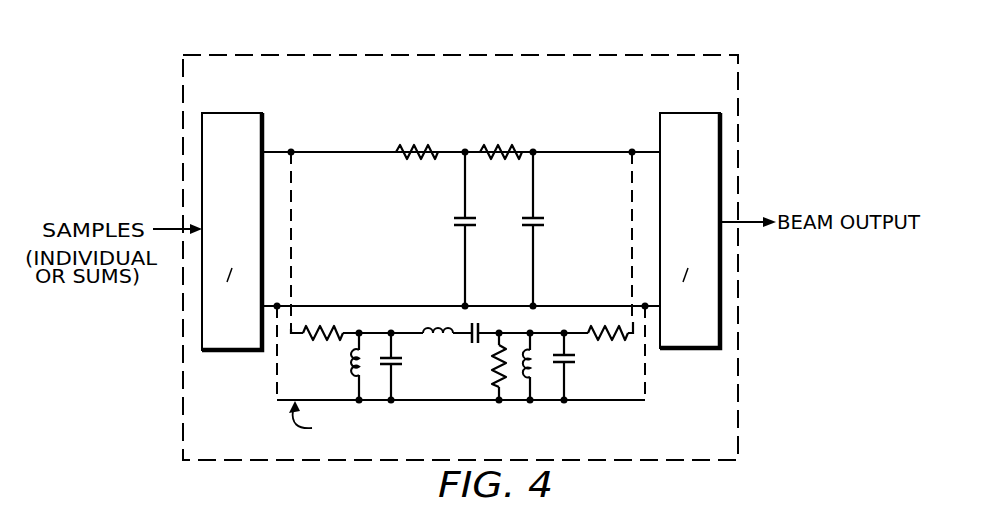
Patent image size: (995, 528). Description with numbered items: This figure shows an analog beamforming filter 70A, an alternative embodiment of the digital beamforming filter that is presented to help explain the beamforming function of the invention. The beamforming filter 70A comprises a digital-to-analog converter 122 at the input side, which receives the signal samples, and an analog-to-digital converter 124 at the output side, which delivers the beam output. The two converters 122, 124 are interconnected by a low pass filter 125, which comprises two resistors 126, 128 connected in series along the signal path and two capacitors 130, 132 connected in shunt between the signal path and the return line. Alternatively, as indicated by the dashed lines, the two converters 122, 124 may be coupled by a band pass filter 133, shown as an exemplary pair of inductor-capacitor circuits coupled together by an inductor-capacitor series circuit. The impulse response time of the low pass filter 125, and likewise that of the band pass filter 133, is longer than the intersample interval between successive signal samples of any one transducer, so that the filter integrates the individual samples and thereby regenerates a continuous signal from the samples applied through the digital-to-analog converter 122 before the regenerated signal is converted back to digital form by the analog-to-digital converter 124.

The beamforming filter 70A is at (291, 54).
The digital-to-analog converter 122 is at (212, 352).
The analog-to-digital converter 124 is at (678, 350).
The low pass filter 125 is at (519, 211).
The resistor 126 is at (418, 146).
The resistor 128 is at (506, 146).
The capacitor 130 is at (456, 222).
The capacitor 132 is at (541, 222).
The band pass filter 133 is at (464, 403).